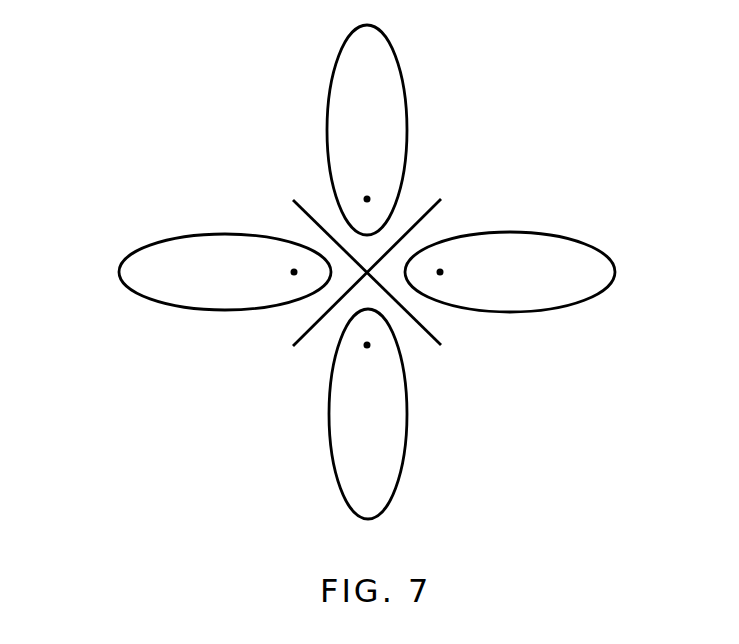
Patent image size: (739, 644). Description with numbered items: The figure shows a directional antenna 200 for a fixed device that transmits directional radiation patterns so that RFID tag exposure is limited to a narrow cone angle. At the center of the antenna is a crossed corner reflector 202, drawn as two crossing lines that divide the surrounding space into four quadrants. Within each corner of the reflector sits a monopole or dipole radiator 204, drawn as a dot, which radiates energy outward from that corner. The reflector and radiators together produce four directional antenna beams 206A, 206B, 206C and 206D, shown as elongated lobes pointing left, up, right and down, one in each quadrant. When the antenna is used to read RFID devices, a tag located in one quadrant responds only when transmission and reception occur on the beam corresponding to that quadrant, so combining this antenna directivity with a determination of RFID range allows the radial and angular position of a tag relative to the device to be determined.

The directional antenna 200 is at (630, 368).
The crossed corner reflector 202 is at (302, 208).
The monopole or dipole radiator 204 is at (294, 272).
The directional antenna beam 206A is at (163, 238).
The directional antenna beam 206B is at (328, 92).
The directional antenna beam 206C is at (518, 232).
The directional antenna beam 206D is at (407, 415).